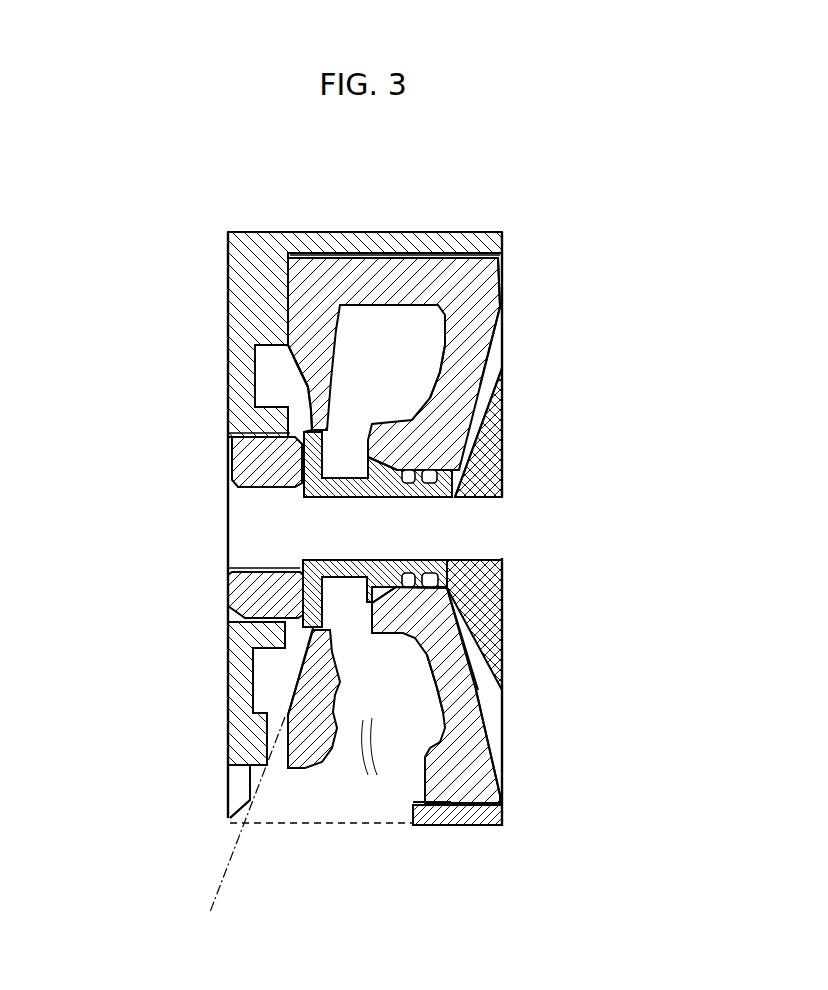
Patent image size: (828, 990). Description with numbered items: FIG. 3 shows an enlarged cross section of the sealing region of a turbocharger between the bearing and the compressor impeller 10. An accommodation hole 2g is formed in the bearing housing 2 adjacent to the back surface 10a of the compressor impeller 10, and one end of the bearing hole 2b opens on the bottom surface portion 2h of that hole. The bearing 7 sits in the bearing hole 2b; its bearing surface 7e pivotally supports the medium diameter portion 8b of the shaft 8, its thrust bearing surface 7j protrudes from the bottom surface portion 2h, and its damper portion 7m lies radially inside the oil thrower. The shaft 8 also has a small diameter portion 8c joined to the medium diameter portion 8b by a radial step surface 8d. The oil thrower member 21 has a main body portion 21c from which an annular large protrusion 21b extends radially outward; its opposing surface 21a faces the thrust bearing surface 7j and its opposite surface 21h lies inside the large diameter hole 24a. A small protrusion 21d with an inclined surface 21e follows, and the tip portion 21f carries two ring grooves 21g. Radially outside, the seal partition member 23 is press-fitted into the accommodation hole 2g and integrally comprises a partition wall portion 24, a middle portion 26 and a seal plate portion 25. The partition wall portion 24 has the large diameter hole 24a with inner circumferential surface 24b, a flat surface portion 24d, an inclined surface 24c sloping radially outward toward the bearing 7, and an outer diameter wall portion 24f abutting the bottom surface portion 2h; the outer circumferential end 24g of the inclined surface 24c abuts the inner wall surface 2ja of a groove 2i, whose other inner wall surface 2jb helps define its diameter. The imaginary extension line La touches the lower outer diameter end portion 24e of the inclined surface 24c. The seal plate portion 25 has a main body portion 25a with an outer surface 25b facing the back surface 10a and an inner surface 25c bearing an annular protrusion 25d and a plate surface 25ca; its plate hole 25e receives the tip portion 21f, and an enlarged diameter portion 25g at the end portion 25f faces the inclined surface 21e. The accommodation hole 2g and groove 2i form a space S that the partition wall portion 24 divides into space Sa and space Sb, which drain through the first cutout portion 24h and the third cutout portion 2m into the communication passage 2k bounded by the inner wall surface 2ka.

The bearing housing 2 is at (480, 232).
The bottom surface portion 2h is at (277, 232).
The accommodation hole 2g is at (502, 245).
The inner wall surface 2ja is at (255, 345).
The groove 2i is at (255, 375).
The inner wall surface 2jb is at (258, 407).
The bearing hole 2b is at (245, 620).
The third cutout portion 2m is at (270, 668).
The communication passage 2k is at (288, 800).
The inner wall surface 2ka is at (500, 826).
The seal partition member 23 is at (500, 275).
The oil thrower member 21 is at (350, 475).
The partition wall portion 24 is at (320, 290).
The outer diameter wall portion 24f is at (290, 258).
The outer circumferential end 24g is at (290, 318).
The inclined surface 24c is at (305, 385).
The opposing surface 21a is at (305, 432).
The large protrusion 21b is at (302, 255).
The main body portion 21c is at (358, 305).
The small protrusion 21d is at (403, 420).
The inclined surface 21e is at (440, 300).
The middle portion 26 is at (502, 305).
The tip portion 21f is at (502, 322).
The large diameter hole 24a is at (320, 492).
The inner circumferential surface 24b is at (305, 478).
The bearing 7 is at (270, 440).
The damper portion 7m is at (265, 465).
The bearing surface 7e is at (265, 583).
The thrust bearing surface 7j is at (303, 563).
The seal plate portion 25 is at (502, 360).
The main body portion 25a is at (502, 345).
The back surface 10a is at (502, 417).
The compressor impeller 10 is at (502, 425).
The outer surface 25b is at (502, 467).
The enlarged diameter portion 25g is at (407, 500).
The plate hole 25e is at (503, 627).
The shaft 8 is at (357, 497).
The medium diameter portion 8b is at (503, 552).
The small diameter portion 8c is at (503, 570).
The step surface 8d is at (503, 597).
The ring grooves 21g is at (480, 715).
The end portion 25f is at (490, 740).
The opposite surface 21h is at (367, 628).
The inner surface 25c is at (470, 815).
The annular protrusion 25d is at (450, 803).
The plate surface 25ca is at (460, 826).
The first cutout portion 24h is at (306, 770).
The flat surface portion 24d is at (300, 660).
The outer diameter end portion 24e is at (295, 720).
The space S is at (245, 740).
The space Sa is at (245, 770).
The space Sb is at (365, 720).
The imaginary extension line La is at (242, 828).